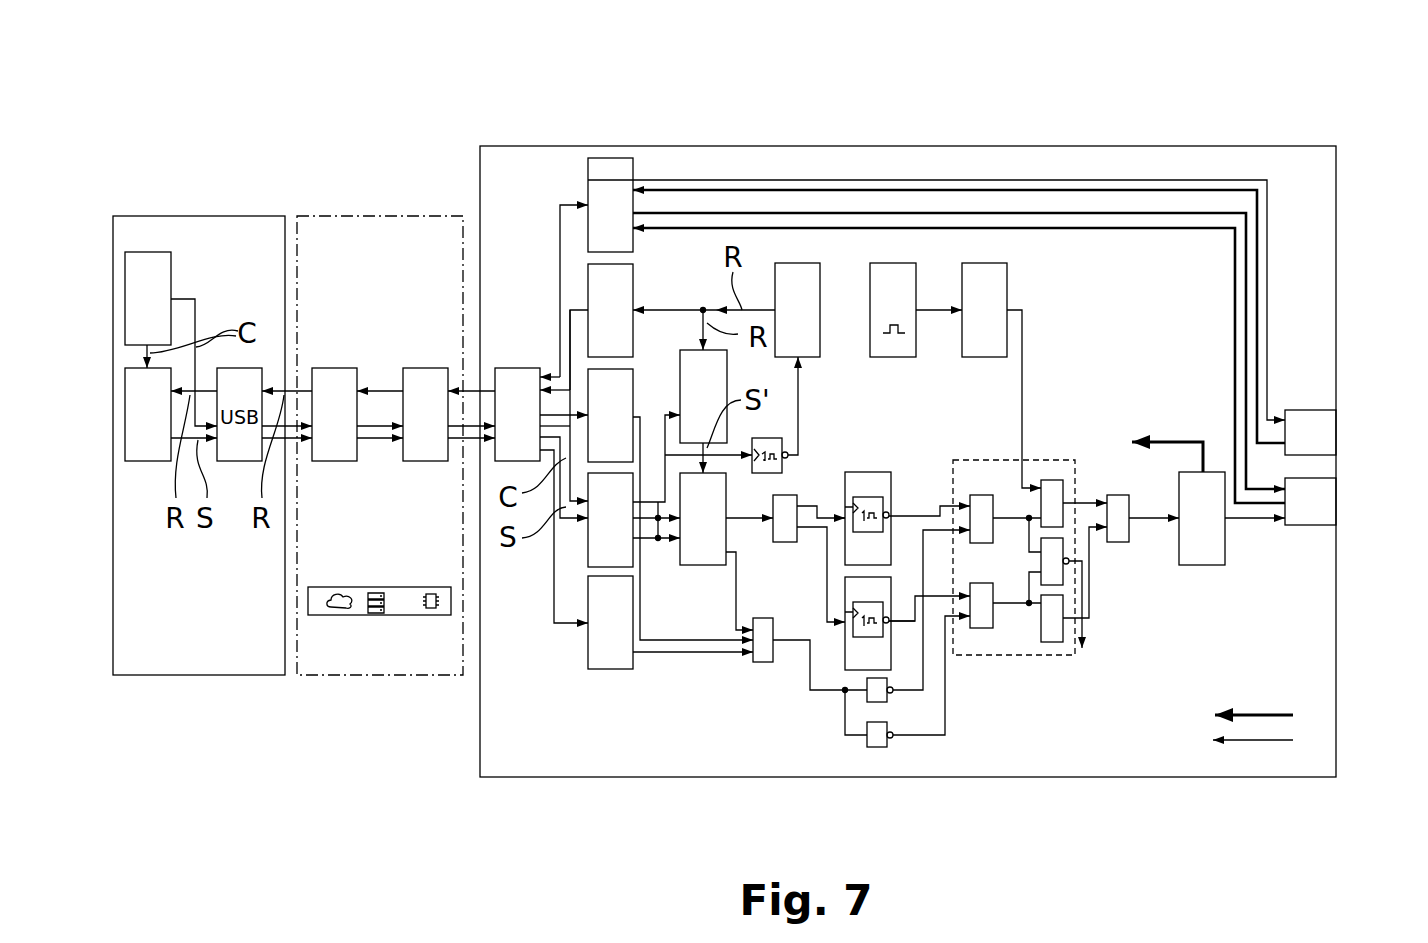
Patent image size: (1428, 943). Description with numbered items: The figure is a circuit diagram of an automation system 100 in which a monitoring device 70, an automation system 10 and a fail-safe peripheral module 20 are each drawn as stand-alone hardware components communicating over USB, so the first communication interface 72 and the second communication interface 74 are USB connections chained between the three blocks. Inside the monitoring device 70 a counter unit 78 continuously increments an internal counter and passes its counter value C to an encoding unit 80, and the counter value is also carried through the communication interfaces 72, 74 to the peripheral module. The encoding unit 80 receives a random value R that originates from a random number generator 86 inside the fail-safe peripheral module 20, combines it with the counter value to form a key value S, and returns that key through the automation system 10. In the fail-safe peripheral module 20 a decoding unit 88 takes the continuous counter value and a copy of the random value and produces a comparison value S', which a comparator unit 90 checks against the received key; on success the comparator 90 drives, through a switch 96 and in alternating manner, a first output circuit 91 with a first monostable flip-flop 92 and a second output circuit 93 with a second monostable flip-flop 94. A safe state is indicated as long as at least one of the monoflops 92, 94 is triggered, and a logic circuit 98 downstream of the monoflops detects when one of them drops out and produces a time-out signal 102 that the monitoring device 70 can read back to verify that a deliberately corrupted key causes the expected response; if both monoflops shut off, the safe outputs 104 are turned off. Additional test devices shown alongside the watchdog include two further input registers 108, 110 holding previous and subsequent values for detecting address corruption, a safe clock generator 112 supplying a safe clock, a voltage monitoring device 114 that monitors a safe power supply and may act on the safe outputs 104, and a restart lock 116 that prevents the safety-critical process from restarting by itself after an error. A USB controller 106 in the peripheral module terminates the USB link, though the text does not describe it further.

The automation system 10 is at (351, 206).
The fail-safe peripheral module 20 is at (868, 146).
The monitoring device 70 is at (198, 206).
The first communication interface 72 is at (293, 391).
The second communication interface 74 is at (474, 402).
The counter unit 78 is at (140, 252).
The encoding unit 80 is at (140, 461).
The random number generator 86 is at (802, 263).
The decoding unit 88 is at (689, 350).
The comparator unit 90 is at (702, 565).
The first output circuit 91 is at (886, 462).
The first monostable flip-flop 92 is at (863, 472).
The second output circuit 93 is at (901, 658).
The second monostable flip-flop 94 is at (845, 656).
The switch 96 is at (790, 542).
The logic circuit 98 is at (1010, 655).
The automation system 100 is at (736, 107).
The time-out signal 102 is at (1086, 626).
The safe outputs 104 is at (1310, 525).
The USB controller 106 is at (588, 547).
The input register 108 is at (588, 373).
The input register 110 is at (613, 669).
The safe clock generator 112 is at (897, 263).
The voltage monitoring device 114 is at (984, 263).
The restart lock 116 is at (1203, 565).